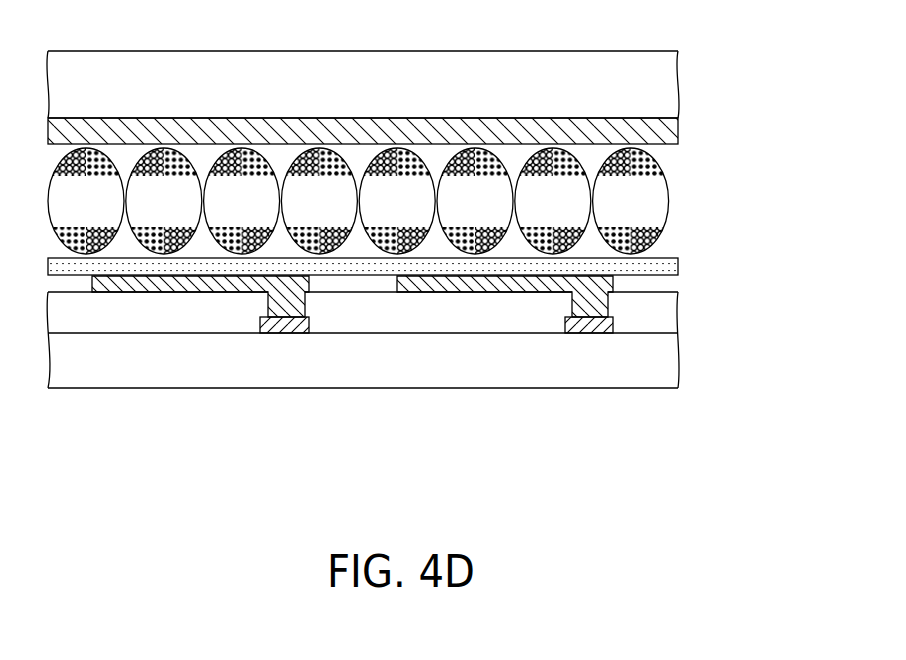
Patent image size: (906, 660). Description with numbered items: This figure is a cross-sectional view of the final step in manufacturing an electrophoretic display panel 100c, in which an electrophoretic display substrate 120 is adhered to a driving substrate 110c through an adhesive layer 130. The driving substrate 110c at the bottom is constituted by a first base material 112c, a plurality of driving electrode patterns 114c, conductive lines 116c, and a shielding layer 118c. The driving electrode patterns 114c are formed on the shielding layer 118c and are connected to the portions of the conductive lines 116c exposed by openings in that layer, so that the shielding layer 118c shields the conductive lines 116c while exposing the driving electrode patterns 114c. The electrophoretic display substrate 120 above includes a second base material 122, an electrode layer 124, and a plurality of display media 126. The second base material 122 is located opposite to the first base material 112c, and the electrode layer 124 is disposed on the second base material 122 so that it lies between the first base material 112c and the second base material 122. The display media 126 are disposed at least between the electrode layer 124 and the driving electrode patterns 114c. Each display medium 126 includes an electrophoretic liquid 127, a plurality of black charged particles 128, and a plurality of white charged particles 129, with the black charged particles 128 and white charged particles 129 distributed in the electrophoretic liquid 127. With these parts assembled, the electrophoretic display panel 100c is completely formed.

The electrophoretic display panel 100c is at (674, 410).
The driving substrate 110c is at (632, 437).
The first base material 112c is at (524, 365).
The driving electrode patterns 114c is at (605, 317).
The conductive lines 116c is at (598, 307).
The shielding layer 118c is at (484, 323).
The electrophoretic display substrate 120 is at (764, 77).
The second base material 122 is at (663, 83).
The electrode layer 124 is at (663, 130).
The display media 126 is at (717, 173).
The electrophoretic liquid 127 is at (665, 200).
The black charged particles 128 is at (660, 173).
The white charged particles 129 is at (660, 228).
The adhesive layer 130 is at (665, 268).